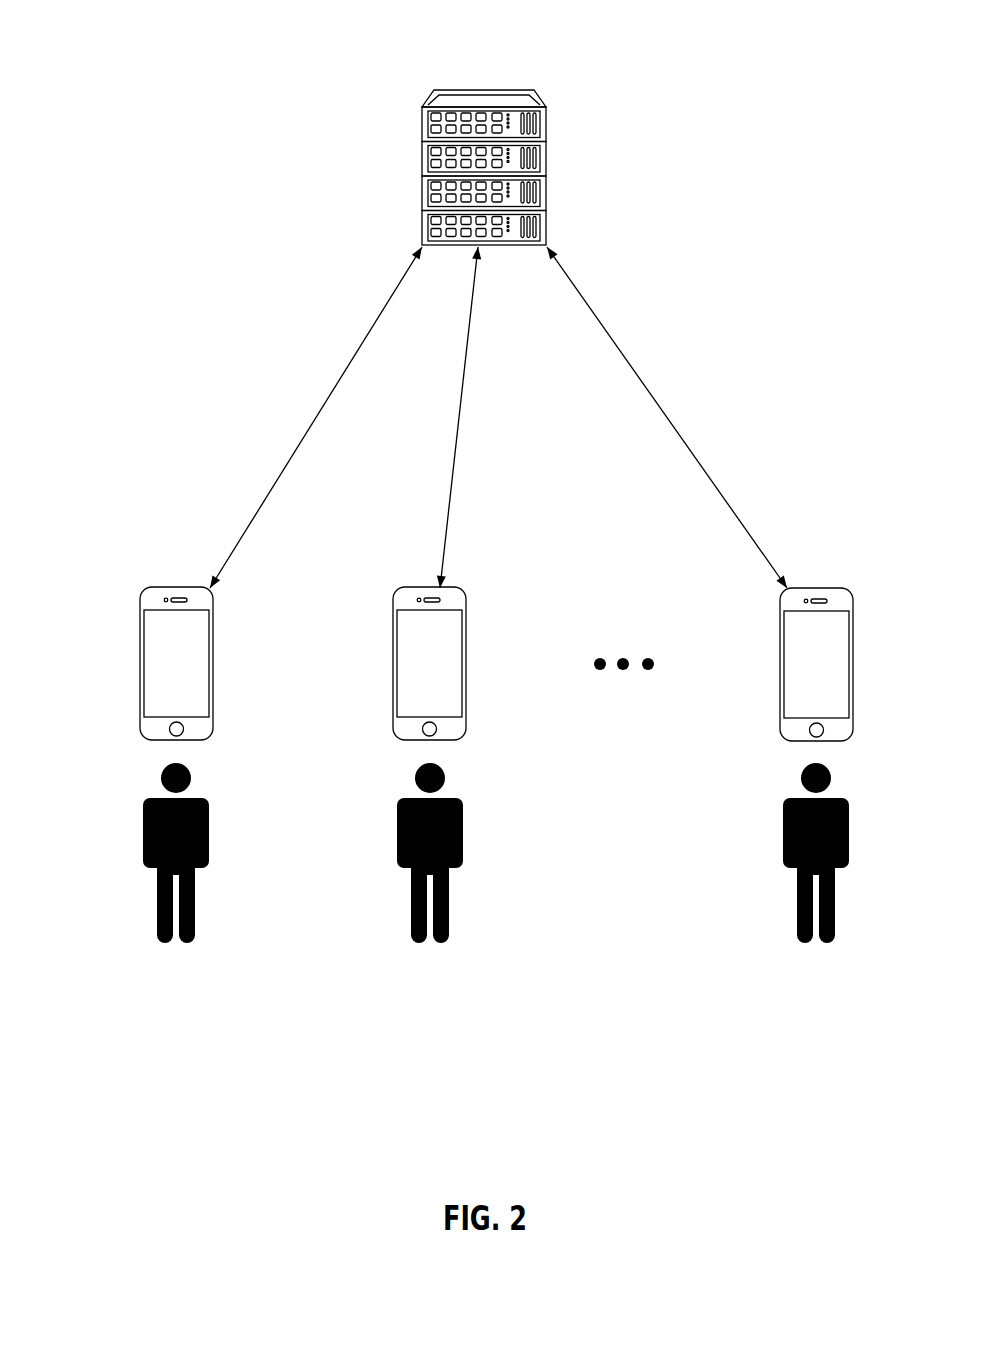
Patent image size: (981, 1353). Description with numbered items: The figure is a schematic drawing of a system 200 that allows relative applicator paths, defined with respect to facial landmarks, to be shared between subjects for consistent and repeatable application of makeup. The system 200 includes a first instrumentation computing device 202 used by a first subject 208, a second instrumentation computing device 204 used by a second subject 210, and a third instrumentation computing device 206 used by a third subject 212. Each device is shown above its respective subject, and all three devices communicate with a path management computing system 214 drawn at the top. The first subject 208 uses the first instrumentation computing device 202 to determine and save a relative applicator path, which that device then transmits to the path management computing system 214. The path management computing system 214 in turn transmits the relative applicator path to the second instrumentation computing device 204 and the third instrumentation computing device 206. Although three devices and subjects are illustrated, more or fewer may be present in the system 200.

The system 200 is at (823, 72).
The first instrumentation computing device 202 is at (140, 625).
The second instrumentation computing device 204 is at (393, 625).
The third instrumentation computing device 206 is at (780, 625).
The first subject 208 is at (146, 805).
The second subject 210 is at (400, 805).
The third subject 212 is at (786, 805).
The path management computing system 214 is at (421, 130).